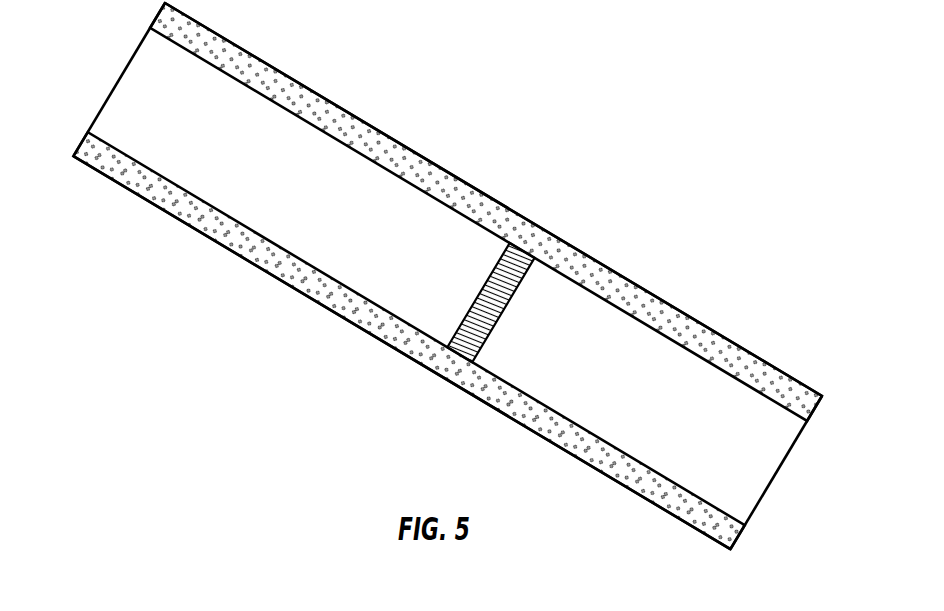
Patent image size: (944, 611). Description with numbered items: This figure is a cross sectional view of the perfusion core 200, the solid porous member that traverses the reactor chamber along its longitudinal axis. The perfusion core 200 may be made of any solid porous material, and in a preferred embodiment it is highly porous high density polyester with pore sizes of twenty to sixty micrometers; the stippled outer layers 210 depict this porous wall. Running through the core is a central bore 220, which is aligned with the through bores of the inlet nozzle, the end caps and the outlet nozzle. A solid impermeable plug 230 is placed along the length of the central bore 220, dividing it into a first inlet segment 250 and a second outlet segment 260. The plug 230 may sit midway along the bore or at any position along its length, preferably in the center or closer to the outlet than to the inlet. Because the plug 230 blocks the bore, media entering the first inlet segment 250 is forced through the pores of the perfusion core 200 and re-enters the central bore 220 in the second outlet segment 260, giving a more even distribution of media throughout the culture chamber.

The perfusion core 200 is at (353, 113).
The first outer layer 210 is at (750, 367).
The central bore 220 is at (583, 303).
The solid impermeable plug 230 is at (467, 340).
The first inlet segment 250 is at (150, 82).
The second outlet segment 260 is at (743, 467).